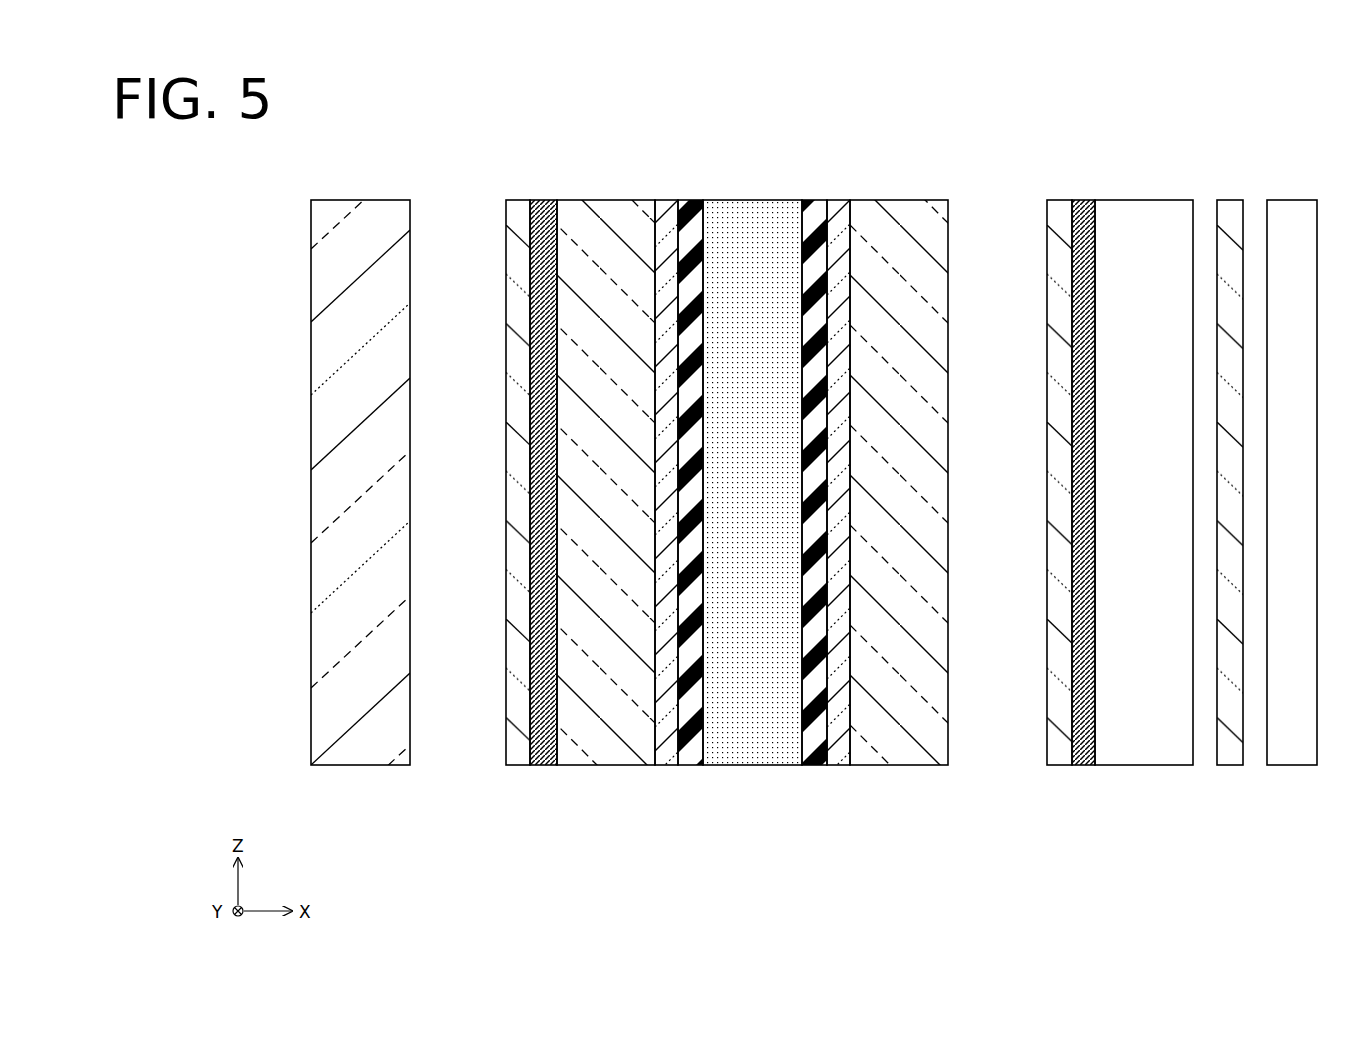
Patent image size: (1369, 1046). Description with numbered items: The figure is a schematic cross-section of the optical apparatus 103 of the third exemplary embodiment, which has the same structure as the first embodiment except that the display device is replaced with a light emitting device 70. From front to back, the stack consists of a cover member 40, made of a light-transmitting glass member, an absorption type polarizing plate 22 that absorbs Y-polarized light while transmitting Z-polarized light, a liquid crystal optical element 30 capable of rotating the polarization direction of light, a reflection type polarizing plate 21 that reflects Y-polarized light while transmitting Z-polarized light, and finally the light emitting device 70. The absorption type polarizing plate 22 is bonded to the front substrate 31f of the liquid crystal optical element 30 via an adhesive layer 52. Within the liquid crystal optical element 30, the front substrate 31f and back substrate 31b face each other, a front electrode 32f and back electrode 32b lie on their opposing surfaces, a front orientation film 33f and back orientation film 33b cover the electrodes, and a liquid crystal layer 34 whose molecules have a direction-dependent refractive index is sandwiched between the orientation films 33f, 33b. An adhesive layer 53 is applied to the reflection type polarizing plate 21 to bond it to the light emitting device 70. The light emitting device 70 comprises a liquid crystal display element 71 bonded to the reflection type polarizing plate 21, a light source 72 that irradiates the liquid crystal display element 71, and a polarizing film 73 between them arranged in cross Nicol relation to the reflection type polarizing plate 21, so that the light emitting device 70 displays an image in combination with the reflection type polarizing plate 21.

The optical apparatus 103 is at (1268, 126).
The cover member 40 is at (362, 199).
The absorption type polarizing plate 22 is at (520, 199).
The adhesive layer 52 is at (543, 199).
The liquid crystal optical element 30 is at (948, 186).
The front substrate 31f is at (605, 766).
The front electrode 32f is at (663, 766).
The front orientation film 33f is at (690, 766).
The liquid crystal layer 34 is at (752, 482).
The back orientation film 33b is at (815, 766).
The back electrode 32b is at (838, 766).
The back substrate 31b is at (895, 766).
The reflection type polarizing plate 21 is at (1058, 199).
The adhesive layer 53 is at (1080, 199).
The light emitting device 70 is at (1317, 191).
The liquid crystal display element 71 is at (1118, 766).
The polarizing film 73 is at (1230, 766).
The light source 72 is at (1292, 766).